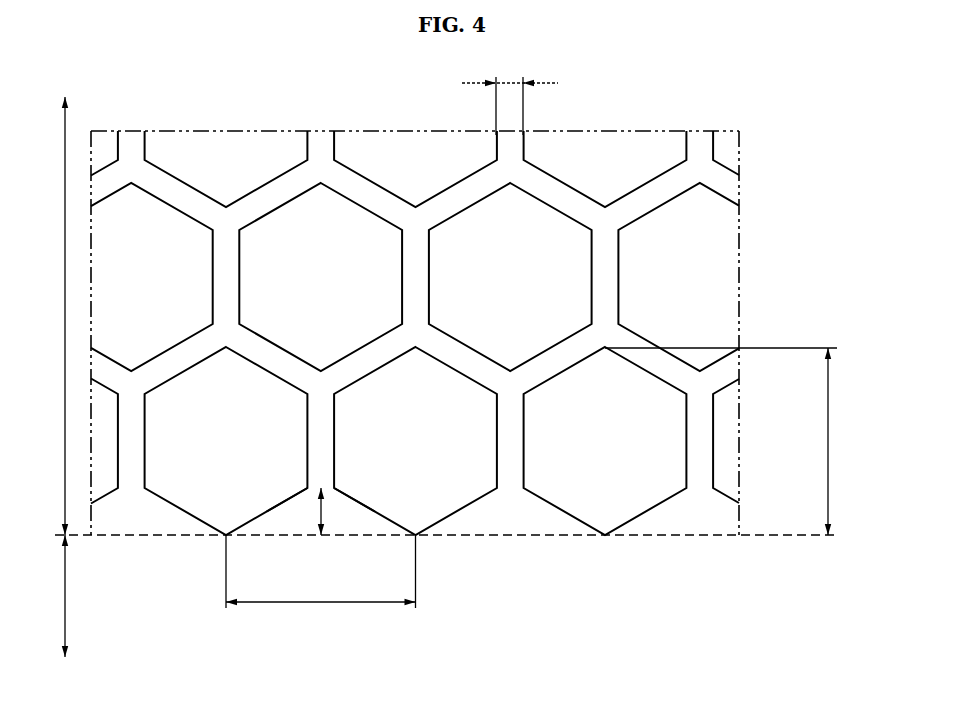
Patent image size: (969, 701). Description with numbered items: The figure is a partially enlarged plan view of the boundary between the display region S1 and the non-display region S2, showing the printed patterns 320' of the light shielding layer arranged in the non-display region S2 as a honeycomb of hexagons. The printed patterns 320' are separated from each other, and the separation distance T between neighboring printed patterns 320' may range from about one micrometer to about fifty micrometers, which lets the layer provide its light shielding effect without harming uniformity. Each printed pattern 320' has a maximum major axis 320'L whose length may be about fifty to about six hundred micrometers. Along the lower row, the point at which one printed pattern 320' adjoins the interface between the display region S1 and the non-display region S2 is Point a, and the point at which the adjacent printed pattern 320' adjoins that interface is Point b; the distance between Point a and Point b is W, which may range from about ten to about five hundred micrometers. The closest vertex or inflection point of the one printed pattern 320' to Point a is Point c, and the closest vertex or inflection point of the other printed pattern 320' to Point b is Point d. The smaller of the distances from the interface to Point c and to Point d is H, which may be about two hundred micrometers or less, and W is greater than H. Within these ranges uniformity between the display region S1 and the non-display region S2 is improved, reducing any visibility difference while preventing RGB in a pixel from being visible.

The printed pattern 320' is at (624, 490).
The maximum major axis 320'L is at (734, 441).
The Point a is at (226, 536).
The Point b is at (416, 536).
The Point c is at (300, 490).
The Point d is at (333, 490).
The display region S1 is at (50, 596).
The non-display region S2 is at (50, 316).
The separation distance T is at (510, 96).
The minimum distance H is at (312, 511).
The distance W is at (321, 571).